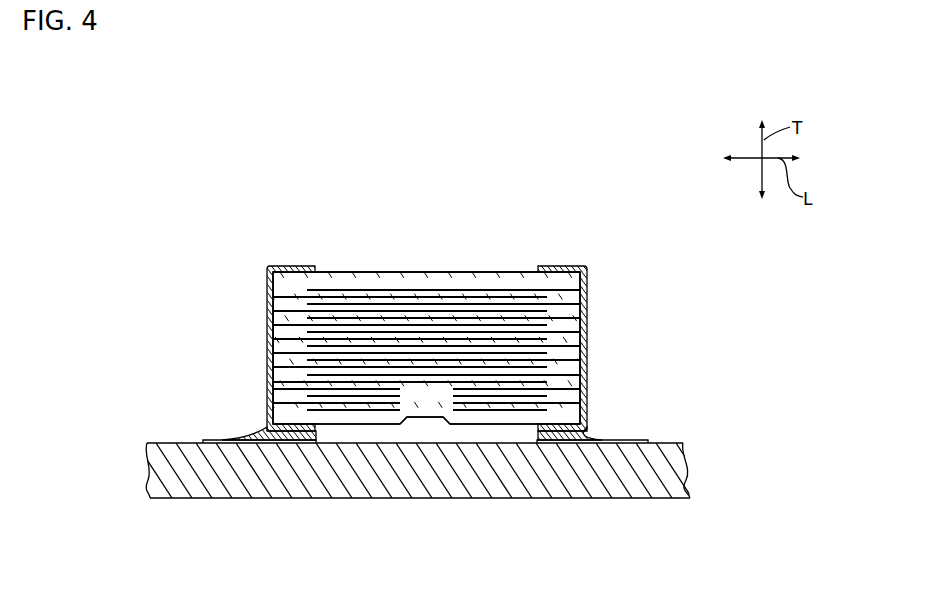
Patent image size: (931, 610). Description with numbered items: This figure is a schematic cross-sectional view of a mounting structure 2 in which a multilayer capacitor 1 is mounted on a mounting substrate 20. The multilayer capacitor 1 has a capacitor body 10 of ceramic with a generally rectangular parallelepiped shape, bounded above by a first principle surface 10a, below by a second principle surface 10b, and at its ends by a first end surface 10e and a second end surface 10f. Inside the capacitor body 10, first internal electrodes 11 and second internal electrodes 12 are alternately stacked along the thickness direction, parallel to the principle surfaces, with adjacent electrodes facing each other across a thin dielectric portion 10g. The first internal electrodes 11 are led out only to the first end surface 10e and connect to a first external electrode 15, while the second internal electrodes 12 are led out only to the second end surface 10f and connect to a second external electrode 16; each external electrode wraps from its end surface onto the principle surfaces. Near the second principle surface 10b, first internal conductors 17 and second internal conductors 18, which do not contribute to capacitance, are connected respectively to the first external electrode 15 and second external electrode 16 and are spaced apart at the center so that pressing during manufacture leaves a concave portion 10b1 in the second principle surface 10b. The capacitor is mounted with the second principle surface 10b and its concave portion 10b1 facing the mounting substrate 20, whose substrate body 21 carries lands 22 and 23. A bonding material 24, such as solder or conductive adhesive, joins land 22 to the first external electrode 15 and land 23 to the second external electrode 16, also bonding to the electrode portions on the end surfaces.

The multilayer capacitor 1 is at (524, 260).
The mounting structure 2 is at (536, 204).
The capacitor body 10 is at (468, 266).
The first principle surface 10a is at (342, 271).
The second principle surface 10b is at (349, 429).
The concave portion 10b1 is at (423, 418).
The first end surface 10e is at (267, 283).
The second end surface 10f is at (586, 285).
The dielectric portion 10g is at (452, 290).
The first internal electrodes 11 is at (333, 377).
The second internal electrodes 12 is at (453, 388).
The first external electrode 15 is at (267, 342).
The second external electrode 16 is at (582, 317).
The first internal conductors 17 is at (373, 407).
The second internal conductors 18 is at (538, 407).
The mounting substrate 20 is at (221, 504).
The substrate body 21 is at (178, 503).
The land 22 is at (222, 440).
The land 23 is at (618, 438).
The bonding material 24 is at (262, 430).